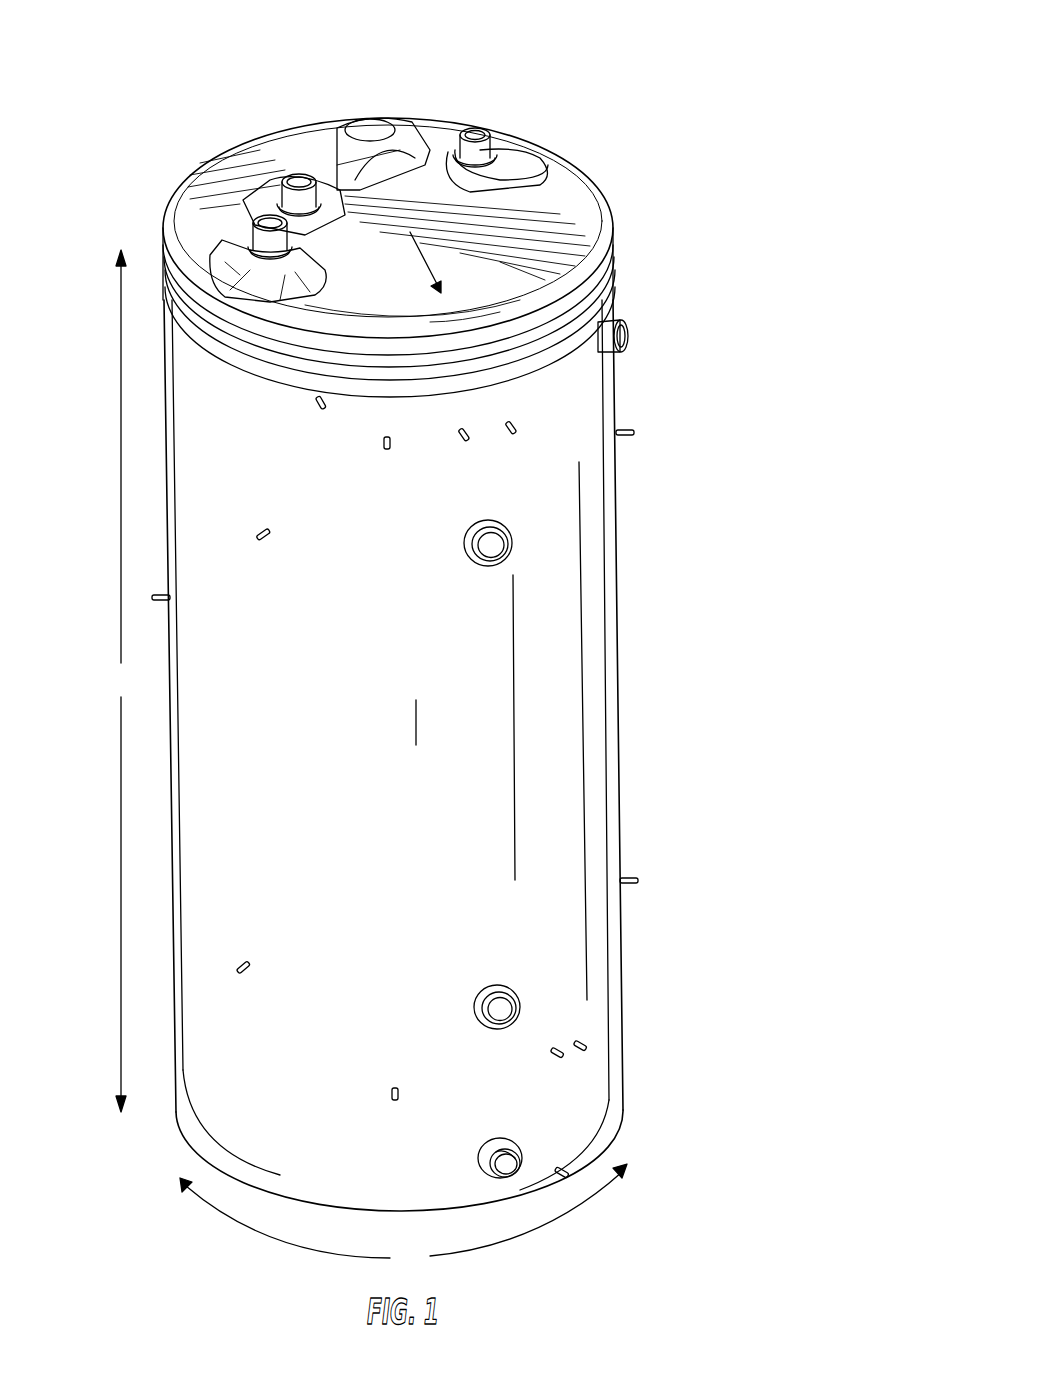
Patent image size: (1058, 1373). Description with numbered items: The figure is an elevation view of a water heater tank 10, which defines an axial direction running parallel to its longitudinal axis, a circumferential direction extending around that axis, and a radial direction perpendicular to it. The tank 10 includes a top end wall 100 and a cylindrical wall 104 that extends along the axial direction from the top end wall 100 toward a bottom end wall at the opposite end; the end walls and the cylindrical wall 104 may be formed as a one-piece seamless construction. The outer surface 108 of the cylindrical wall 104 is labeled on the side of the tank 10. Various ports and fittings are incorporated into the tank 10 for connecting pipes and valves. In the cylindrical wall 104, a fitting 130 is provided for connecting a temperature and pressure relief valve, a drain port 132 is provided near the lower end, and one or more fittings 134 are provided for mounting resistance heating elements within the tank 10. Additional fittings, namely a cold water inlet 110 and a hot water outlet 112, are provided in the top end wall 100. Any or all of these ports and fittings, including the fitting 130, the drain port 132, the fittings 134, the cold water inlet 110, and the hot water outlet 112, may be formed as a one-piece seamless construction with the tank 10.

The water heater tank 10 is at (657, 56).
The top end wall 100 is at (595, 227).
The cylindrical wall 104 is at (600, 735).
The outer surface of sidewall 108 is at (304, 860).
The cold water inlet 110 is at (478, 128).
The hot water outlet 112 is at (292, 172).
The fitting 130 is at (632, 340).
The drain port 132 is at (518, 1146).
The fittings 134 is at (508, 556).